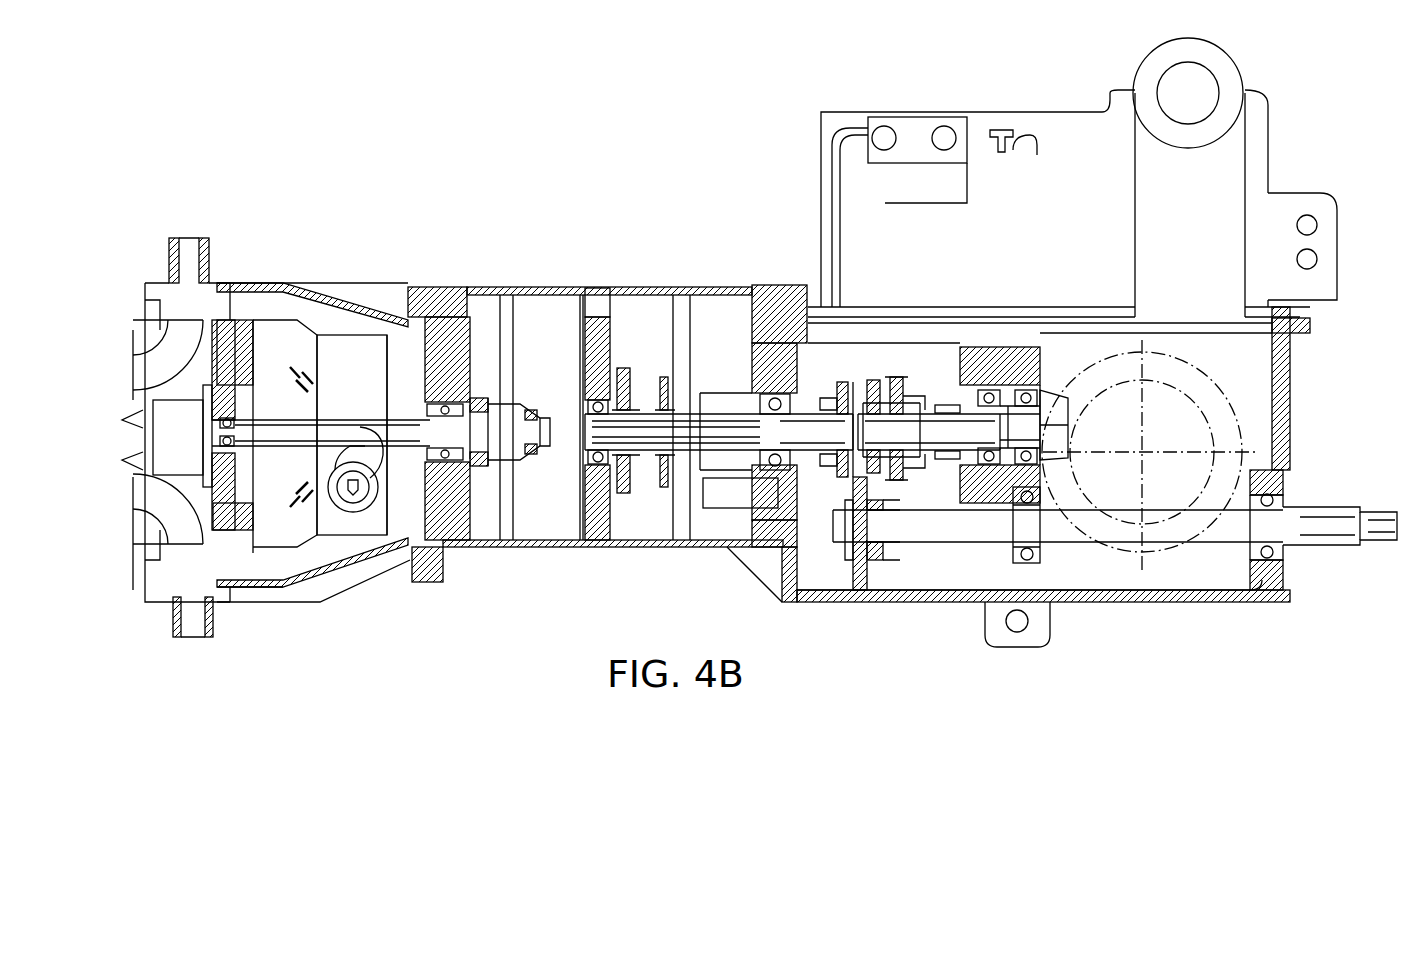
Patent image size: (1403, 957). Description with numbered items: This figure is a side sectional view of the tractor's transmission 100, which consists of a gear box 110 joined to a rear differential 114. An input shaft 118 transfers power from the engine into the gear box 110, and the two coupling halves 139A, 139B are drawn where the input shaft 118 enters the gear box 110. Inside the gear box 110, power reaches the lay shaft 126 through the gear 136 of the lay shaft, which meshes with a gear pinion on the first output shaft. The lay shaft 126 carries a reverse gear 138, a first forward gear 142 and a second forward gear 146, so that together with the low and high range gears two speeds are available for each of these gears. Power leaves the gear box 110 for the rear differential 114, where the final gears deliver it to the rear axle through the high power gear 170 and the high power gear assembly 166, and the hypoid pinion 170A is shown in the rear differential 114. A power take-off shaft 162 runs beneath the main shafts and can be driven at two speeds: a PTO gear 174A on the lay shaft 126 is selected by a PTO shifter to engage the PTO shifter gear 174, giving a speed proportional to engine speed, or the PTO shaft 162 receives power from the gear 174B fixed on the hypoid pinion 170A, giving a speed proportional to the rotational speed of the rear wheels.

The transmission 100 is at (441, 186).
The gear box 110 is at (599, 560).
The rear differential 114 is at (947, 605).
The input shaft 118 is at (377, 420).
The lay shaft 126 is at (638, 465).
The gear 136 is at (618, 367).
The second forward gear 146 is at (660, 378).
The reverse gear 138 is at (722, 400).
The first forward gear 142 is at (698, 372).
The coupling half 139A is at (543, 405).
The coupling half 139B is at (480, 403).
The power take-off (PTO) shaft 162 is at (943, 530).
The high power gear assembly 166 is at (1052, 390).
The high power gear 170 is at (890, 372).
The hypoid pinion 170A is at (945, 403).
The PTO shifter gear 174 is at (863, 598).
The PTO gear 174A is at (833, 397).
The gear 174B is at (870, 380).